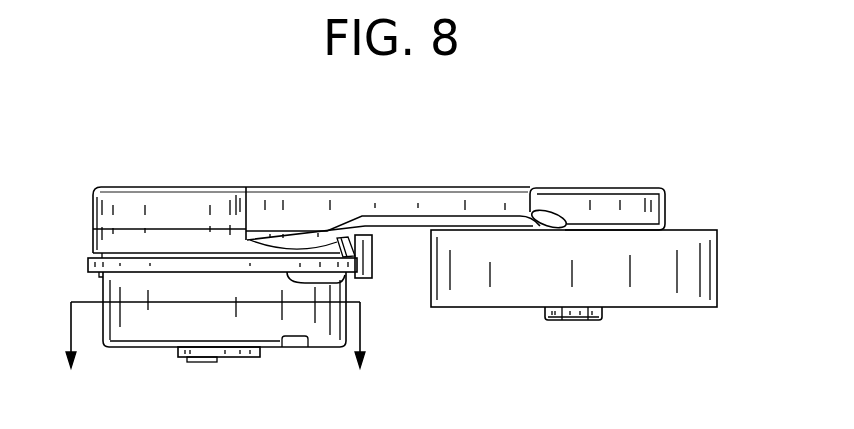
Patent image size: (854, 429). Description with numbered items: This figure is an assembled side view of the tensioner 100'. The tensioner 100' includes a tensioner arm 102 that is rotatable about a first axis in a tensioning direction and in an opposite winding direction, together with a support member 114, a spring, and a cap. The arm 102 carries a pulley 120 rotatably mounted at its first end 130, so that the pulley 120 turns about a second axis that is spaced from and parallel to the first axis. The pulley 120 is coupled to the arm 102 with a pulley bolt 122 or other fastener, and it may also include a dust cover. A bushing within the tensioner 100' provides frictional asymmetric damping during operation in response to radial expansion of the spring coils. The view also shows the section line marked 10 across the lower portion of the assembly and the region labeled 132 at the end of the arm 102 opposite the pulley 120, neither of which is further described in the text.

The tensioner 100' is at (403, 235).
The tensioner arm 102 is at (430, 197).
The rear housing block 132 is at (121, 200).
The first end 130 is at (650, 202).
The pulley 120 is at (703, 267).
The pulley bolt 122 is at (597, 318).
The support member 114 is at (148, 325).
The section line 10 is at (214, 335).